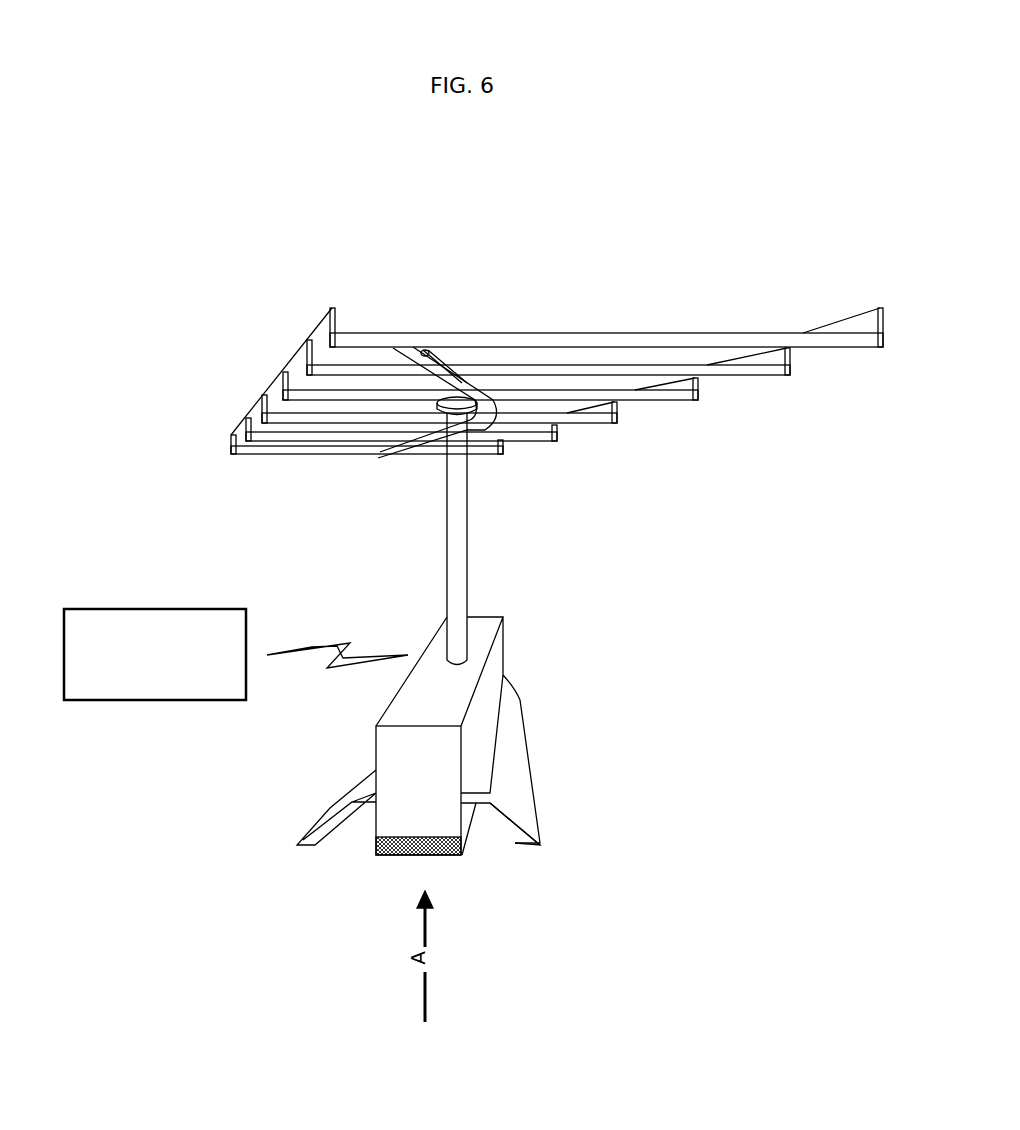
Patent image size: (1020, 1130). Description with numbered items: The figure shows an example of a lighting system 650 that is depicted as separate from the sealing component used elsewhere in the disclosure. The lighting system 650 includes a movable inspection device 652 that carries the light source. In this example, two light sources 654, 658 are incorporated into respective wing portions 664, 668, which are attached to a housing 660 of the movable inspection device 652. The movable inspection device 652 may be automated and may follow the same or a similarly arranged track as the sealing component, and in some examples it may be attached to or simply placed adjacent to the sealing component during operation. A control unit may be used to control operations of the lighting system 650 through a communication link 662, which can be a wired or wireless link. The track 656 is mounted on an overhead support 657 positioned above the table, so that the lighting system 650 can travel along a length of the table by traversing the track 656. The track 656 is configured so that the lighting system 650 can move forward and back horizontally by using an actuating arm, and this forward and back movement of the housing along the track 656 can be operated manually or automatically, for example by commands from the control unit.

The lighting system 650 is at (742, 255).
The movable inspection device 652 is at (494, 709).
The light source 654 is at (463, 512).
The track 656 is at (460, 373).
The overhead support 657 is at (330, 330).
The light source 658 is at (527, 840).
The housing 660 is at (156, 609).
The communication link 662 is at (312, 647).
The wing portion 664 is at (332, 808).
The wing portion 668 is at (522, 778).